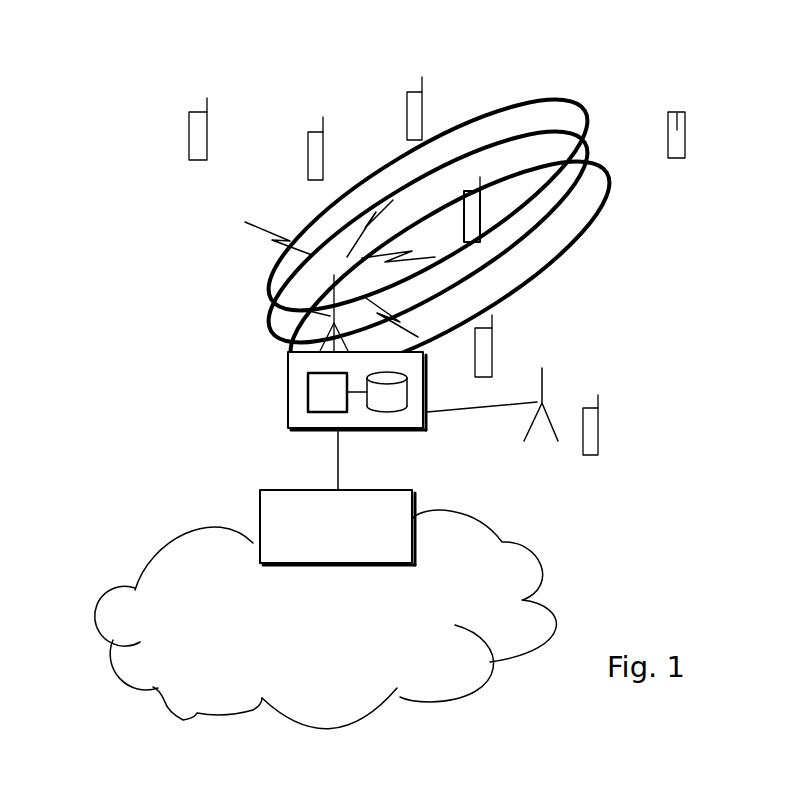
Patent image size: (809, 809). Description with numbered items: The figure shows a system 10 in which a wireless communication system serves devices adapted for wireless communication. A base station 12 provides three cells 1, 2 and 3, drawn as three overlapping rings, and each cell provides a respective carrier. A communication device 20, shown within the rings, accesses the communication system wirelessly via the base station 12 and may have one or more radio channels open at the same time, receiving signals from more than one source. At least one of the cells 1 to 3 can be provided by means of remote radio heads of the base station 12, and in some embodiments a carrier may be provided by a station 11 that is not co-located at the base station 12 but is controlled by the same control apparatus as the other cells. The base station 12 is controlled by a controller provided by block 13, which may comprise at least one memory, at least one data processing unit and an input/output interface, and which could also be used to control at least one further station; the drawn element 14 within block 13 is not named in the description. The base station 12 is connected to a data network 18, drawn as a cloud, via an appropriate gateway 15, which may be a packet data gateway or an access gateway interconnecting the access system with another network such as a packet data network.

The system 10 is at (160, 276).
The cell 1 is at (585, 150).
The cell 2 is at (608, 202).
The cell 3 is at (583, 106).
The communication device 20 is at (480, 228).
The station 11 is at (545, 384).
The base station 12 is at (273, 302).
The block 13 is at (243, 396).
The processor 14 is at (315, 392).
The gateway 15 is at (258, 507).
The data network 18 is at (160, 568).